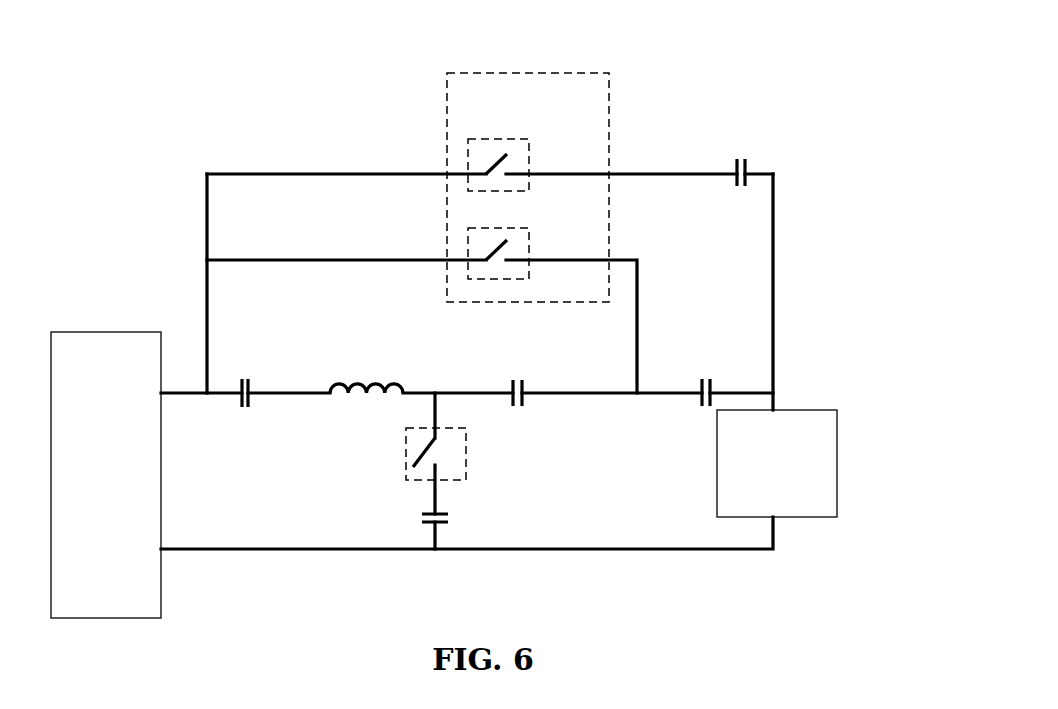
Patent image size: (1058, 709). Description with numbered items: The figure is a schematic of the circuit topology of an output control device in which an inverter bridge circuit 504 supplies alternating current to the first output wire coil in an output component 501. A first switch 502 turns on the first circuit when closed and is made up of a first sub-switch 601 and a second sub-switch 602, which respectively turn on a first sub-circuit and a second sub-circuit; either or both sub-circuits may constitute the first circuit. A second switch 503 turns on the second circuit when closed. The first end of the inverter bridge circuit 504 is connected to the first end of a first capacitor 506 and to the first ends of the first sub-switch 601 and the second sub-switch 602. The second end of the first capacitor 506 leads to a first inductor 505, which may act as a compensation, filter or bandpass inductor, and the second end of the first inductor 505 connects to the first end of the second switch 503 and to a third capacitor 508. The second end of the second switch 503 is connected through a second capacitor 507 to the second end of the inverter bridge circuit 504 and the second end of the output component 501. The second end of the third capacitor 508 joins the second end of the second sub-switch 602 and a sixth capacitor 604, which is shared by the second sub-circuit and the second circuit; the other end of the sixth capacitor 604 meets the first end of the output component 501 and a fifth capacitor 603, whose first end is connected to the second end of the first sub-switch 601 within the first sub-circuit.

The output component 501 is at (837, 410).
The first switch 502 is at (609, 73).
The second switch 503 is at (466, 463).
The inverter bridge circuit 504 is at (105, 331).
The first inductor 505 is at (382, 378).
The first capacitor 506 is at (250, 378).
The second capacitor 507 is at (447, 513).
The third capacitor 508 is at (523, 380).
The first sub-switch 601 is at (529, 147).
The second sub-switch 602 is at (529, 243).
The fifth capacitor 603 is at (745, 158).
The sixth capacitor 604 is at (710, 379).